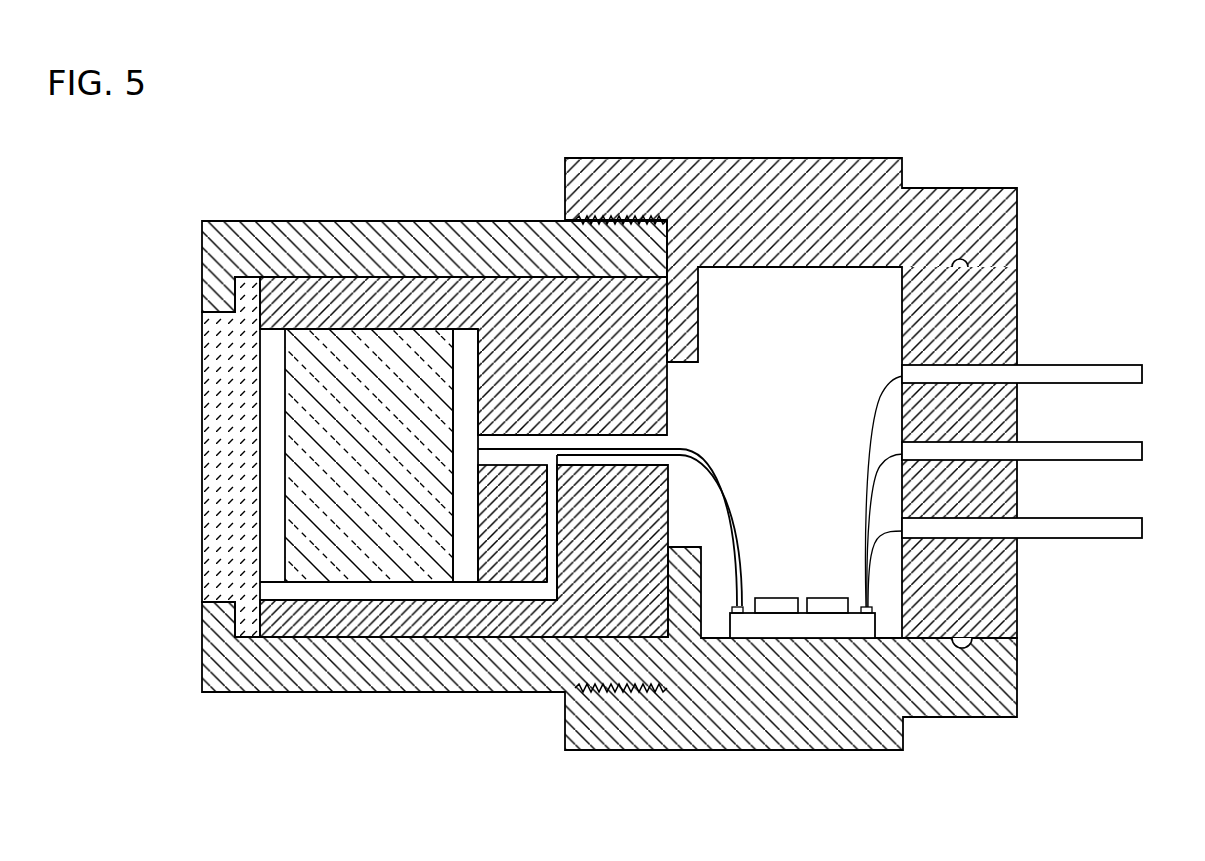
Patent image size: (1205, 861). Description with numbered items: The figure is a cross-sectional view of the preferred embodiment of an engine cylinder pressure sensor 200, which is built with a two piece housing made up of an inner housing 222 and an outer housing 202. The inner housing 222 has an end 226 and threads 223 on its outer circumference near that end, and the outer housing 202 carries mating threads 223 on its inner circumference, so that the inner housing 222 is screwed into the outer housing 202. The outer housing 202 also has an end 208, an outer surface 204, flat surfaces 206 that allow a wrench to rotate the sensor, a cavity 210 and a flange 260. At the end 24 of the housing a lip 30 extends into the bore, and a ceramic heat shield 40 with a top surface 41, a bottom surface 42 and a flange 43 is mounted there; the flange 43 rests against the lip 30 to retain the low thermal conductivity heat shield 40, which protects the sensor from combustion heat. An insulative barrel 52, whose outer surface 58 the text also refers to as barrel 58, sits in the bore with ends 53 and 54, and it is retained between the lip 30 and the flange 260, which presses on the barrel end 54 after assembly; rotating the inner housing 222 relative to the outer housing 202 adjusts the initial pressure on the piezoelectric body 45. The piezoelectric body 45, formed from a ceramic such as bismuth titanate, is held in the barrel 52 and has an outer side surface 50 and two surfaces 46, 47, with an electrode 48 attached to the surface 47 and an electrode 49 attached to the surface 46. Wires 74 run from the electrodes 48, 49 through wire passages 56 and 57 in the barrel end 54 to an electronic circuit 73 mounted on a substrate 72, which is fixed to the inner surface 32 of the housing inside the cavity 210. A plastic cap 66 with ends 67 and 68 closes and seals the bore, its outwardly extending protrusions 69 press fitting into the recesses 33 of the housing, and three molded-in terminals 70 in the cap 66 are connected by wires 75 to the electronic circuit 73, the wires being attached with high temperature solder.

The engine cylinder pressure sensor 200 is at (789, 102).
The outer housing 202 is at (790, 756).
The outer surface 204 is at (598, 752).
The flat surfaces 206 is at (975, 738).
The end 208 is at (1018, 227).
The cavity 210 is at (797, 280).
The inner housing 222 is at (484, 697).
The threads 223 is at (610, 217).
The end 226 is at (668, 670).
The flange 260 is at (700, 336).
The end 24 is at (202, 238).
The lip 30 is at (205, 290).
The inner surface 32 is at (833, 269).
The recesses 33 is at (957, 648).
The ceramic heat shield 40 is at (201, 556).
The top surface 41 is at (258, 623).
The bottom surface 42 is at (202, 456).
The flange 43 is at (262, 637).
The piezoelectric body 45 is at (360, 443).
The surface 46 is at (462, 511).
The surface 47 is at (281, 381).
The electrode 48 is at (287, 465).
The electrode 49 is at (450, 402).
The outer side surface 50 is at (338, 328).
The insulative barrel 52 is at (466, 216).
The end 53 is at (287, 300).
The end 54 is at (665, 380).
The wire passage 56 is at (357, 588).
The wire passage 57 is at (511, 430).
The outer surface 58 is at (397, 277).
The cap 66 is at (1021, 303).
The end 67 is at (900, 316).
The end 68 is at (1020, 588).
The protrusions 69 is at (957, 259).
The terminals 70 is at (1142, 522).
The substrate 72 is at (773, 628).
The electronic circuit 73 is at (801, 580).
The wires 74 is at (705, 465).
The wires 75 is at (871, 416).